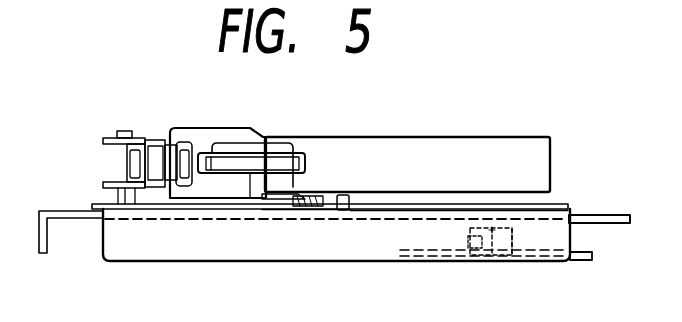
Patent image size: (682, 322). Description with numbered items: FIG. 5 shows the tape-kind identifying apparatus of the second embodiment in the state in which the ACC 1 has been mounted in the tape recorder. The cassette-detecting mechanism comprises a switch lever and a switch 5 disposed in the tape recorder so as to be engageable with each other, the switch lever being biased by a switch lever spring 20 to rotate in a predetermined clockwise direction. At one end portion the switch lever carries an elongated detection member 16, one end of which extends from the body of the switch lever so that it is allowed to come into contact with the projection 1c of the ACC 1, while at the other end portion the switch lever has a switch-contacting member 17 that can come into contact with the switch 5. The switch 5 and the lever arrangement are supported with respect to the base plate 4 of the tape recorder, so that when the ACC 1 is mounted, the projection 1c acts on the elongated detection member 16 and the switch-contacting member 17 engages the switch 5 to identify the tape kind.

The ACC 1 is at (460, 137).
The projection 1c is at (277, 155).
The elongated detection member 16 is at (233, 150).
The switch lever spring 20 is at (300, 204).
The base plate 4 is at (607, 216).
The switch-contacting member 17 is at (470, 228).
The switch 5 is at (502, 238).